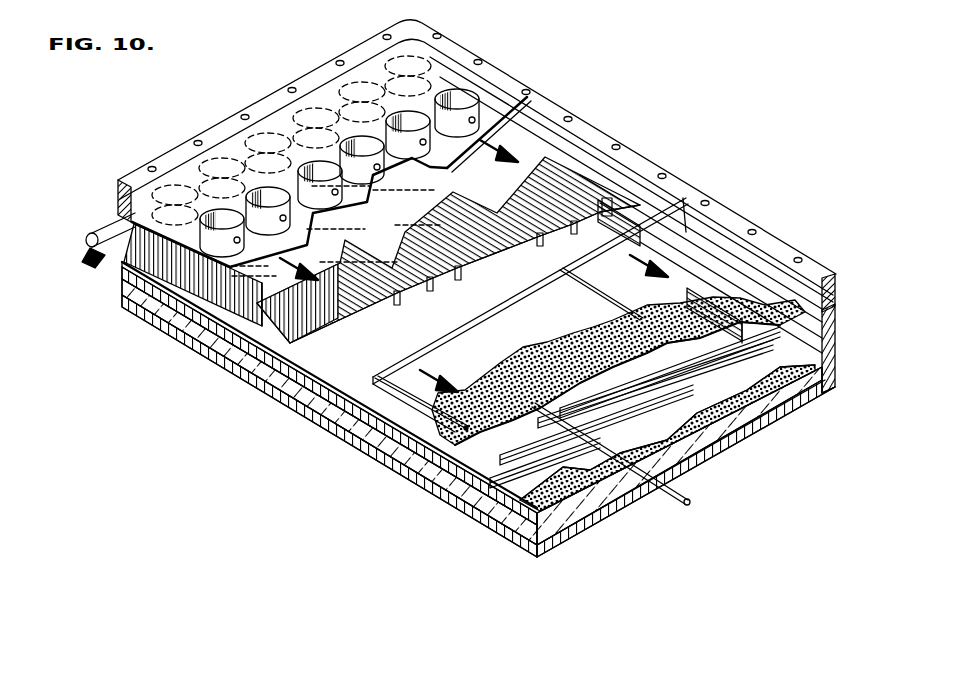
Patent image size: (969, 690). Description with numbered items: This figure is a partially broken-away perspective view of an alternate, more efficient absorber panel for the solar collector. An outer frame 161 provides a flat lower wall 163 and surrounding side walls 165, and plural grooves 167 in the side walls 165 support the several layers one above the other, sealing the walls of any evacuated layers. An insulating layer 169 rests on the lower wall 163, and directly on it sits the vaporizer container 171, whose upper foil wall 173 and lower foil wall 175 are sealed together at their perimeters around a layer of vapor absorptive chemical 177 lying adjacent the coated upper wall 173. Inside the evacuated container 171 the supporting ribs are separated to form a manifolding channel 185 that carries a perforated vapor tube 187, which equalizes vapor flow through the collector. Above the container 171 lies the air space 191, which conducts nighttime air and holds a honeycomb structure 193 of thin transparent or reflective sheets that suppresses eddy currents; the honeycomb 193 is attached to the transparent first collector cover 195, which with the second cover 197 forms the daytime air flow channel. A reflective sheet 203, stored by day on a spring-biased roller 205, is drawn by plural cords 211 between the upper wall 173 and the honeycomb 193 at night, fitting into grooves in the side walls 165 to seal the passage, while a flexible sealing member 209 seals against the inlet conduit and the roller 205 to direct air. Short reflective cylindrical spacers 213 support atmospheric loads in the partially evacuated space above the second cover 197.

The outer frame 161 is at (838, 382).
The lower wall 163 is at (740, 440).
The side walls 165 is at (826, 343).
The grooves 167 is at (795, 312).
The insulating layer 169 is at (583, 525).
The vaporizer container 171 is at (377, 397).
The upper foil wall 173 is at (535, 337).
The lower foil wall 175 is at (668, 410).
The vapor absorptive chemical 177 is at (400, 440).
The manifolding channel 185 is at (585, 455).
The vapor tube 187 is at (663, 498).
The air space 191 is at (665, 257).
The honeycomb structure 193 is at (627, 190).
The first collector cover 195 is at (573, 120).
The second cover 197 is at (527, 151).
The reflective sheet 203 is at (467, 316).
The roller 205 is at (97, 233).
The flexible sealing member 209 is at (85, 270).
The cords 211 is at (440, 70).
The cylindrical spacers 213 is at (197, 218).